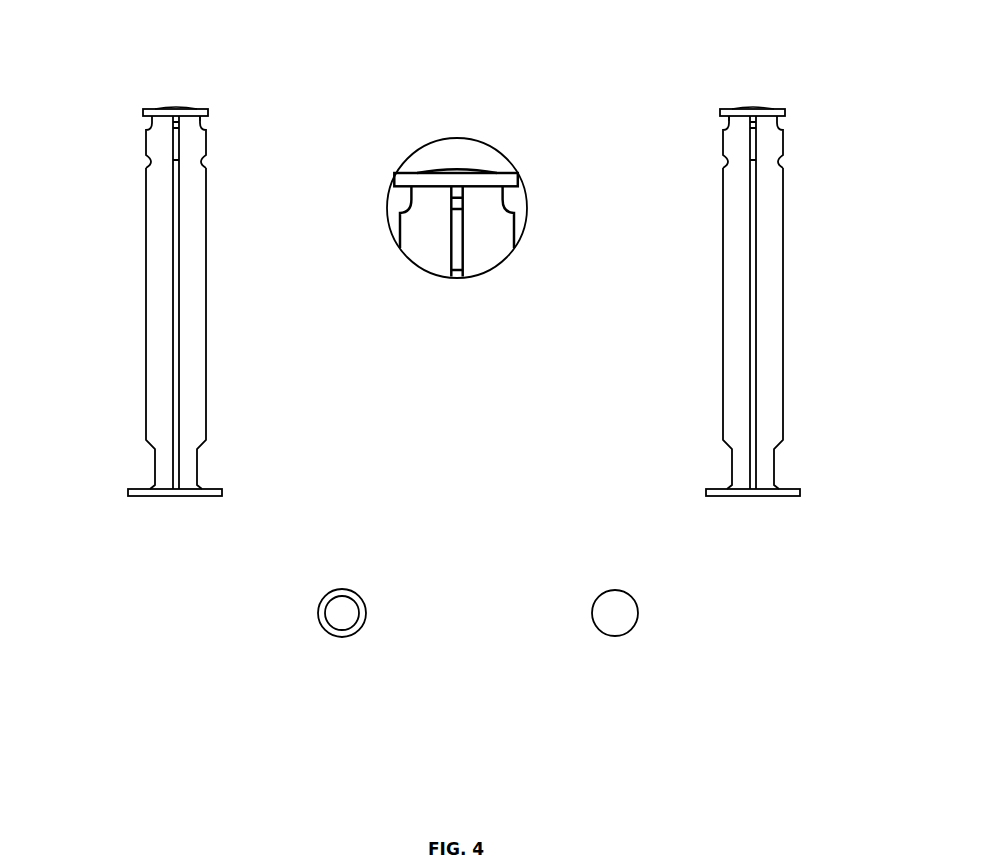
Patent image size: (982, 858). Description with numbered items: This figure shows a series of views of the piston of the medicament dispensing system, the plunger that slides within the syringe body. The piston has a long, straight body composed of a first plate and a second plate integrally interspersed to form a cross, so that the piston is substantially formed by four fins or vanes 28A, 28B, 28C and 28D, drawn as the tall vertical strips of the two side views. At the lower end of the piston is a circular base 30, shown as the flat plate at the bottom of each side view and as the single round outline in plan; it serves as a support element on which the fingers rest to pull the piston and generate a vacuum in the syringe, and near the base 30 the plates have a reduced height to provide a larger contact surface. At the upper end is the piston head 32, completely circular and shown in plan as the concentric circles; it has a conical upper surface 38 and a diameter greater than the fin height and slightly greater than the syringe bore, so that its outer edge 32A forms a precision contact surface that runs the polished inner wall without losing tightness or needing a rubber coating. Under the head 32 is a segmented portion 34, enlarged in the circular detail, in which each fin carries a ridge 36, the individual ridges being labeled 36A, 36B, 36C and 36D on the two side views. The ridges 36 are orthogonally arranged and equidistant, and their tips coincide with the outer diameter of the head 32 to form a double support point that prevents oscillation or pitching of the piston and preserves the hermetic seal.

The fin 28A is at (155, 345).
The fin 28B is at (197, 345).
The fin 28C is at (733, 345).
The fin 28D is at (778, 345).
The circular base 30 is at (172, 497).
The piston head 32 is at (400, 172).
The outer edge 32A is at (134, 116).
The segmented portion 34 is at (206, 112).
The ridge 36 is at (388, 212).
The collar 36A is at (145, 128).
The collar 36B is at (208, 130).
The collar 36C is at (722, 128).
The collar 36D is at (785, 128).
The conical upper surface 38 is at (462, 165).